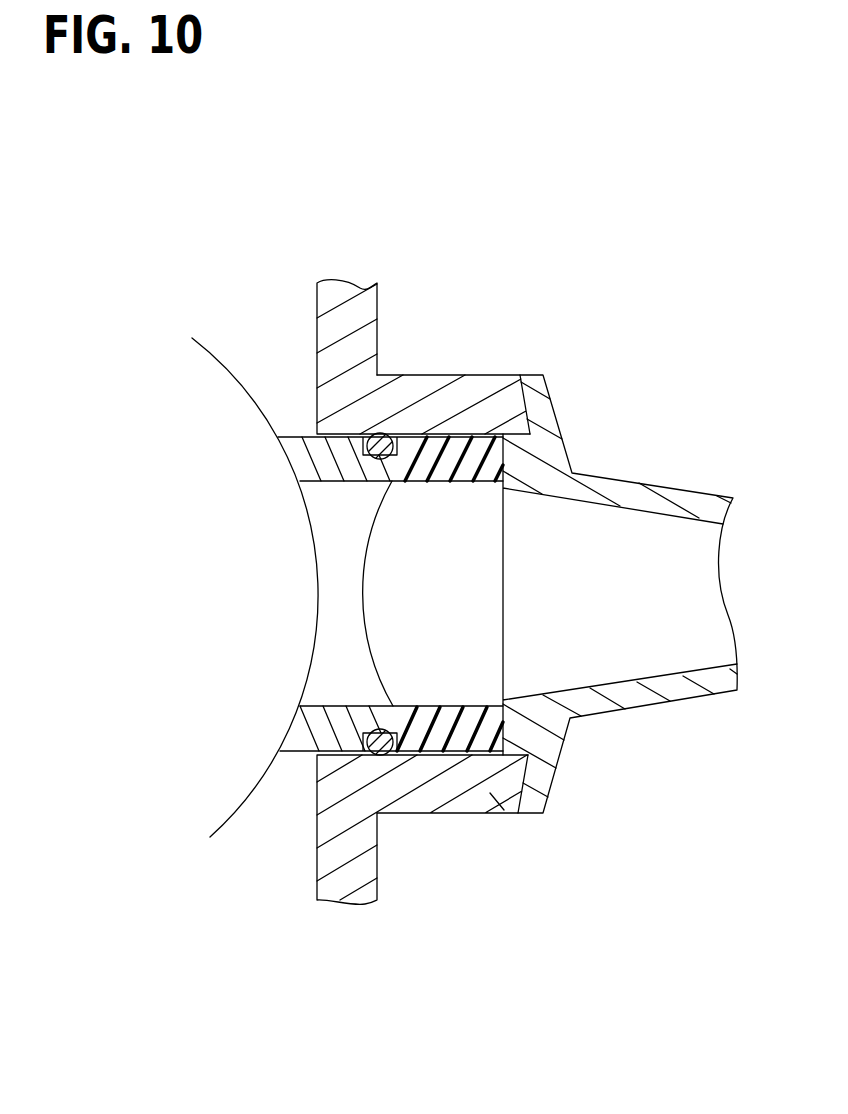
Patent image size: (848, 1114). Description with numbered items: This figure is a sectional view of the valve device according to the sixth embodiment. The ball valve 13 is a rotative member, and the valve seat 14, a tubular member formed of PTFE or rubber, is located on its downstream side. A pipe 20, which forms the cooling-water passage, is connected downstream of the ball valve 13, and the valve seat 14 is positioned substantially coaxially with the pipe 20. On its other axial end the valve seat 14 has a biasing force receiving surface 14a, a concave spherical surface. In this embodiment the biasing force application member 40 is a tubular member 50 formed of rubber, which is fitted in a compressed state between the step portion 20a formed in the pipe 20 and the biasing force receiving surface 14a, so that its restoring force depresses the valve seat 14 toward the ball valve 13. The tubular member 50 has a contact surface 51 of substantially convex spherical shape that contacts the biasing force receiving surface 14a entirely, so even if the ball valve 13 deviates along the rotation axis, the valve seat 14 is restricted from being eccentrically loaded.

The ball valve 13 is at (231, 392).
The valve seat 14 is at (352, 457).
The biasing force receiving surface 14a is at (407, 482).
The pipe 20 is at (531, 780).
The step portion 20a is at (495, 720).
The biasing force application member 40 is at (503, 506).
The tubular member 50 is at (458, 458).
The contact surface 51 is at (378, 515).